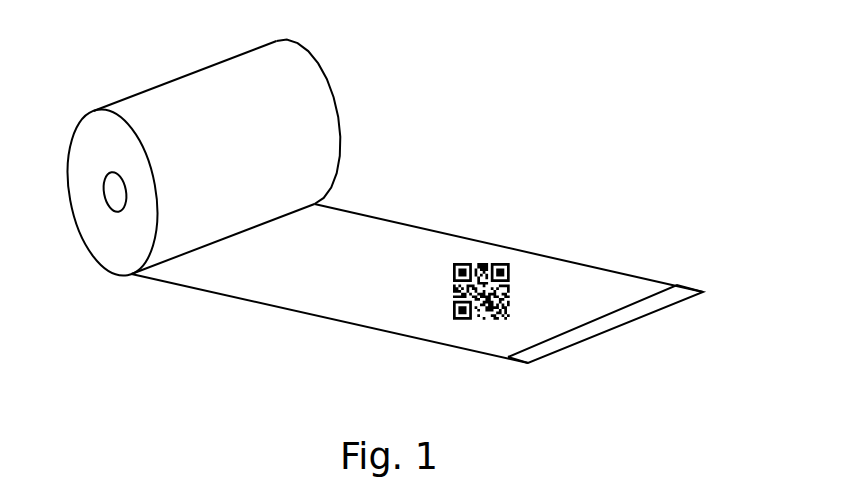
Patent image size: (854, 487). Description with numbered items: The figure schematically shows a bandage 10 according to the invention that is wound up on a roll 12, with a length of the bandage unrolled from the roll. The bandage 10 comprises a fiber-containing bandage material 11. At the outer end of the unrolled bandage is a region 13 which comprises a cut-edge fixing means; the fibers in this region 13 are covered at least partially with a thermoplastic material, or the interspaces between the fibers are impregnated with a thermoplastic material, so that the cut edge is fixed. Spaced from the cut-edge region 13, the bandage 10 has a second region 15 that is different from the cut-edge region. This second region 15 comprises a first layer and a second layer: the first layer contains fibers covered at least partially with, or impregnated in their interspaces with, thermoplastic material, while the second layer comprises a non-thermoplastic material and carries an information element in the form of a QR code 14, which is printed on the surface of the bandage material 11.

The bandage 10 is at (231, 171).
The fiber-containing bandage material 11 is at (323, 295).
The roll 12 is at (120, 243).
The region comprising a cut-edge fixing means 13 is at (673, 297).
The QR code 14 is at (490, 264).
The second region 15 is at (499, 305).